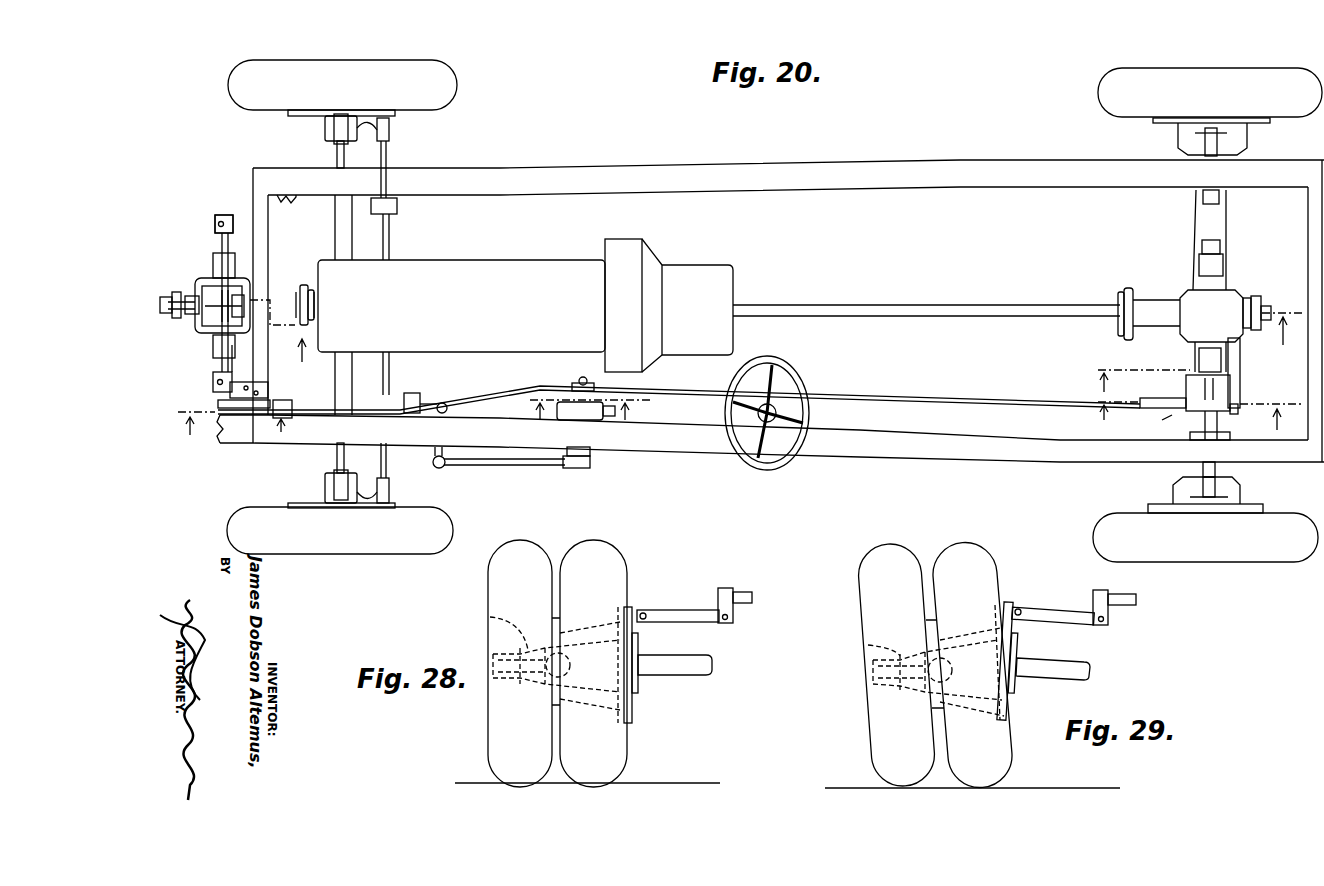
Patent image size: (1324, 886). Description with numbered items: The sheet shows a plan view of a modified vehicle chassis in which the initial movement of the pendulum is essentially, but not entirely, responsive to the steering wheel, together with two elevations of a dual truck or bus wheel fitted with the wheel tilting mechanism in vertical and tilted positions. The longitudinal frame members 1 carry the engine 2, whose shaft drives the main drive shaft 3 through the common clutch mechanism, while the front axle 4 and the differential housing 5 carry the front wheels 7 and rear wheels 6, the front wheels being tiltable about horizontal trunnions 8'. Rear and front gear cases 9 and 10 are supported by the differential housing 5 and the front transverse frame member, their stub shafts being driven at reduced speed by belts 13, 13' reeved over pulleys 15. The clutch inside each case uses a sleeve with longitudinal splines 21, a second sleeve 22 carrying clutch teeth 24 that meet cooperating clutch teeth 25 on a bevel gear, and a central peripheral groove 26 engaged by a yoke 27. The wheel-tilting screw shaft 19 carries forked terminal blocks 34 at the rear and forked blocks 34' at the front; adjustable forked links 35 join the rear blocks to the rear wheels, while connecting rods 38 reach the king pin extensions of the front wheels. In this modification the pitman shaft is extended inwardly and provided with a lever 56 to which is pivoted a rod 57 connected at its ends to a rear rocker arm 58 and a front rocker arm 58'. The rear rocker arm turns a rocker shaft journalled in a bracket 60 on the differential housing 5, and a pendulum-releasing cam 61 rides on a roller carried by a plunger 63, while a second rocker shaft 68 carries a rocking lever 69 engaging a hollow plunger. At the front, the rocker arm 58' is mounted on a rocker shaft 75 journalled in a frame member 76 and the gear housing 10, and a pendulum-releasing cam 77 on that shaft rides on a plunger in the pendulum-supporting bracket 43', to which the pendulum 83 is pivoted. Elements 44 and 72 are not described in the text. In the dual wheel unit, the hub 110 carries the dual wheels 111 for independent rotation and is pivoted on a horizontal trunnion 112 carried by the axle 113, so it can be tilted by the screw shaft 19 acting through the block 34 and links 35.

In FIG. 20, the longitudinal frame members 1 is at (962, 170).
In FIG. 20, the engine 2 is at (484, 262).
In FIG. 20, the main drive shaft 3 is at (892, 305).
In FIG. 20, the front axle 4 is at (335, 218).
In FIG. 20, the differential housing 5 is at (1228, 226).
In FIG. 20, the rear wheels 6 is at (1105, 82).
In FIG. 20, the front wheels 7 is at (448, 85).
In FIG. 20, the horizontal trunnion 8' is at (323, 308).
In FIG. 20, the rear gear case 9 is at (1192, 292).
In FIG. 20, the front gear case 10 is at (202, 280).
In FIG. 20, the belt 13 is at (1144, 299).
In FIG. 20, the belt 13' is at (309, 291).
In FIG. 20, the pulley 15 is at (1119, 296).
In FIG. 20, the screw shaft 19 is at (1204, 249).
In FIG. 28, the screw shaft 19 is at (745, 592).
In FIG. 29, the screw shaft 19 is at (1136, 601).
In FIG. 20, the longitudinal splines 21 is at (1195, 352).
In FIG. 20, the second sleeve 22 is at (1192, 416).
In FIG. 20, the clutch teeth 24 is at (236, 337).
In FIG. 20, the cooperating clutch teeth 25 is at (289, 419).
In FIG. 20, the central peripheral groove 26 is at (195, 433).
In FIG. 20, the yoke 27 is at (590, 420).
In FIG. 28, the forked terminal block 34 is at (719, 587).
In FIG. 29, the forked terminal block 34 is at (1119, 613).
In FIG. 20, the forked block 34' is at (206, 300).
In FIG. 20, the adjustable forked links 35 is at (1203, 198).
In FIG. 28, the adjustable forked links 35 is at (668, 610).
In FIG. 29, the adjustable forked links 35 is at (1042, 610).
In FIG. 20, the connecting rods 38 is at (337, 152).
In FIG. 20, the pendulum-supporting bracket 43' is at (188, 292).
In FIG. 20, the stub shaft 44 is at (1266, 304).
In FIG. 20, the lever 56 is at (578, 388).
In FIG. 20, the rod 57 is at (486, 396).
In FIG. 20, the rear rocker arm 58 is at (1152, 435).
In FIG. 20, the front rocker arm 58' is at (224, 403).
In FIG. 20, the bracket 60 is at (1196, 380).
In FIG. 20, the pendulum-releasing cam 61 is at (1158, 397).
In FIG. 20, the plunger 63 is at (1172, 410).
In FIG. 20, the second rocker shaft 68 is at (1241, 352).
In FIG. 20, the rocking lever 69 is at (1236, 412).
In FIG. 20, the flange 72 is at (1254, 296).
In FIG. 20, the rocker shaft 75 is at (236, 370).
In FIG. 20, the frame member 76 is at (252, 385).
In FIG. 20, the pendulum-releasing cam 77 is at (242, 305).
In FIG. 20, the pendulum 83 is at (212, 306).
In FIG. 28, the hub 110 is at (490, 618).
In FIG. 29, the hub 110 is at (868, 645).
In FIG. 28, the dual wheels 111 is at (585, 555).
In FIG. 29, the dual wheels 111 is at (948, 558).
In FIG. 28, the horizontal trunnion 112 is at (570, 690).
In FIG. 29, the horizontal trunnion 112 is at (956, 692).
In FIG. 28, the axle 113 is at (670, 677).
In FIG. 29, the axle 113 is at (1092, 668).